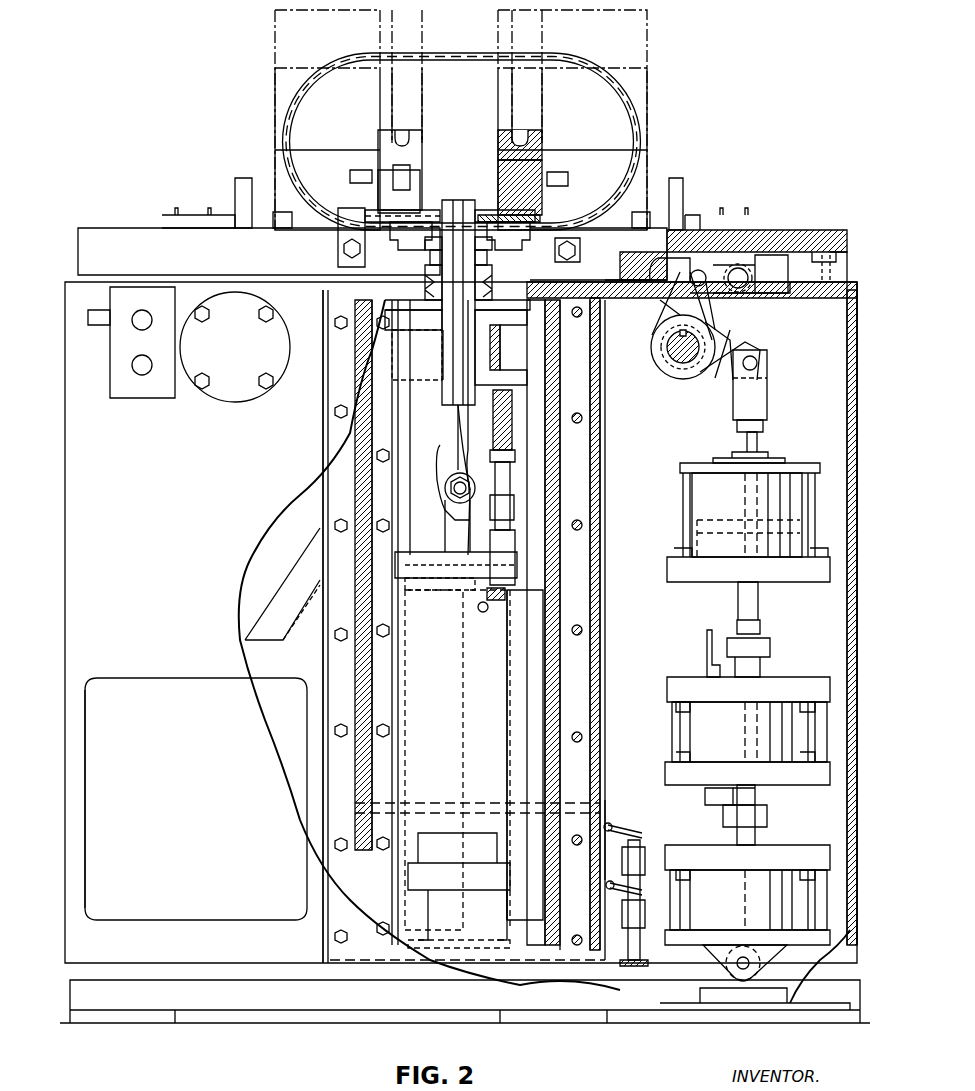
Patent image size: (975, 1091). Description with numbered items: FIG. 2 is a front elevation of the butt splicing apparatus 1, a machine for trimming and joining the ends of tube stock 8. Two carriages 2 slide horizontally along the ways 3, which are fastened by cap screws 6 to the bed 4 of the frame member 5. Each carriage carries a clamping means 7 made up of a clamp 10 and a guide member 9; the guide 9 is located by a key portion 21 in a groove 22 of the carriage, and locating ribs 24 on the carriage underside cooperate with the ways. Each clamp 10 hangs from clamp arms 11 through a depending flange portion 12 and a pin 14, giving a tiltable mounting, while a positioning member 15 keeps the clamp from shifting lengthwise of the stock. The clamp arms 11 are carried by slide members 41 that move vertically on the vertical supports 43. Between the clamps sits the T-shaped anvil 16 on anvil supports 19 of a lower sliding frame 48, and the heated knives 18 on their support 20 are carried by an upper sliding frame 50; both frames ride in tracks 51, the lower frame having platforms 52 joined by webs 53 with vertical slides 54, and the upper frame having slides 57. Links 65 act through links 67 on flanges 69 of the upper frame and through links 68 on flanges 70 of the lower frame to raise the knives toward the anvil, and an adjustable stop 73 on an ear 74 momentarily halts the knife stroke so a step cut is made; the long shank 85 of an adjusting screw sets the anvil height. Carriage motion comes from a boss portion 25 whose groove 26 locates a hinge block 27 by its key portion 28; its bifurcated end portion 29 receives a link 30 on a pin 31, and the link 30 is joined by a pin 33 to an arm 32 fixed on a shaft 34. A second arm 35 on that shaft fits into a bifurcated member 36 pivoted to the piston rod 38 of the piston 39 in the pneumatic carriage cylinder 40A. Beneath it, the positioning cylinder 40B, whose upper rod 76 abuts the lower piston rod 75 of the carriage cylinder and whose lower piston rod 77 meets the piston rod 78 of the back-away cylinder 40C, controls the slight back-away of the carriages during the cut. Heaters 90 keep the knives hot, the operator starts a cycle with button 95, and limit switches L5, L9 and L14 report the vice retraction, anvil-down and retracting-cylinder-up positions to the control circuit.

The butt splicing apparatus 1 is at (150, 220).
The carriages 2 is at (122, 242).
The ways 3 is at (840, 250).
The bed 4 is at (845, 278).
The frame member 5 is at (850, 318).
The cap screws 6 is at (825, 248).
The clamping means 7 is at (375, 140).
The tube stock 8 is at (293, 172).
The guide member 9 is at (535, 250).
The clamp 10 is at (382, 212).
The clamp arms 11 is at (671, 52).
The depending flange portion 12 is at (525, 190).
The pin 14 is at (350, 176).
The positioning member 15 is at (340, 253).
The anvil 16 is at (465, 190).
The knives 18 is at (430, 255).
The anvil supports 19 is at (450, 320).
The support 20 is at (422, 292).
The key portion 21 is at (402, 252).
The groove 22 is at (528, 258).
The locating ribs 24 is at (655, 275).
The boss portion 25 is at (735, 240).
The groove 26 is at (772, 250).
The hinge block 27 is at (780, 295).
The key portion 28 is at (750, 274).
The bifurcated end portion 29 is at (737, 290).
The link 30 is at (752, 262).
The pin 31 is at (742, 285).
The arm 32 is at (668, 322).
The pin 33 is at (692, 272).
The shaft 34 is at (678, 368).
The carriage actuating arm 35 is at (715, 375).
The bifurcated member 36 is at (765, 375).
The piston rod 38 is at (765, 440).
The piston 39 is at (710, 520).
The pneumatic carriage cylinder 40A is at (705, 492).
The positioning cylinder 40B is at (700, 722).
The back-away cylinder 40C is at (736, 885).
The slide members 41 is at (284, 222).
The vertical supports 43 is at (238, 180).
The lower sliding frame 48 is at (440, 590).
The upper sliding frame 50 is at (500, 347).
The tracks 51 is at (568, 606).
The platforms 52 is at (505, 592).
The webs 53 is at (458, 665).
The vertical slides 54 is at (410, 714).
The slides 57 is at (400, 415).
The links 65 is at (515, 503).
The links 67 is at (510, 488).
The links 68 is at (495, 545).
The flanges 69 is at (512, 437).
The flanges 70 is at (448, 580).
The adjustable stop 73 is at (455, 470).
The ear 74 is at (455, 512).
The lower piston rod 75 is at (760, 607).
The upper rod 76 is at (768, 645).
The lower piston rod 77 is at (757, 797).
The piston rod 78 is at (757, 838).
The long shank 85 is at (484, 613).
The heaters 90 is at (606, 621).
The button 95 is at (138, 322).
The limit switch L5 is at (712, 788).
The limit switch L9 is at (640, 912).
The limit switch L14 is at (640, 848).